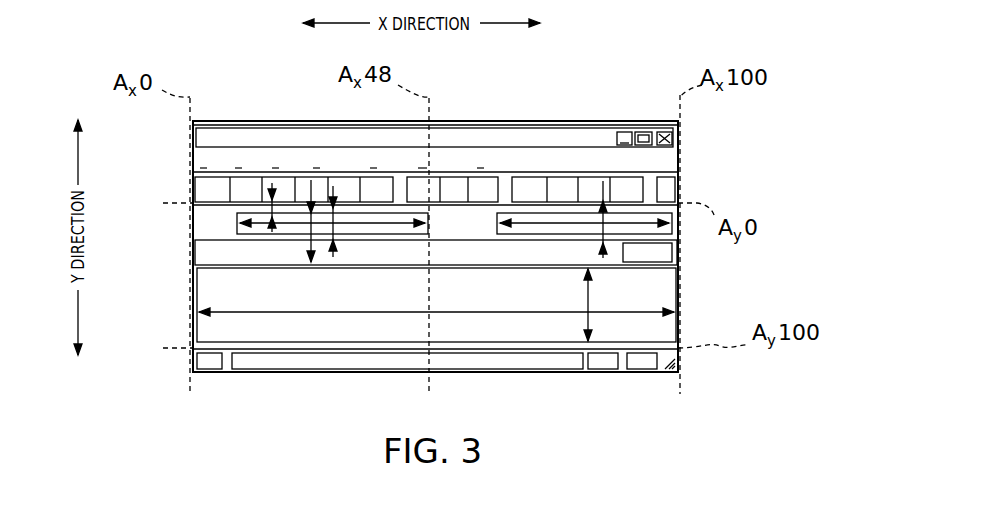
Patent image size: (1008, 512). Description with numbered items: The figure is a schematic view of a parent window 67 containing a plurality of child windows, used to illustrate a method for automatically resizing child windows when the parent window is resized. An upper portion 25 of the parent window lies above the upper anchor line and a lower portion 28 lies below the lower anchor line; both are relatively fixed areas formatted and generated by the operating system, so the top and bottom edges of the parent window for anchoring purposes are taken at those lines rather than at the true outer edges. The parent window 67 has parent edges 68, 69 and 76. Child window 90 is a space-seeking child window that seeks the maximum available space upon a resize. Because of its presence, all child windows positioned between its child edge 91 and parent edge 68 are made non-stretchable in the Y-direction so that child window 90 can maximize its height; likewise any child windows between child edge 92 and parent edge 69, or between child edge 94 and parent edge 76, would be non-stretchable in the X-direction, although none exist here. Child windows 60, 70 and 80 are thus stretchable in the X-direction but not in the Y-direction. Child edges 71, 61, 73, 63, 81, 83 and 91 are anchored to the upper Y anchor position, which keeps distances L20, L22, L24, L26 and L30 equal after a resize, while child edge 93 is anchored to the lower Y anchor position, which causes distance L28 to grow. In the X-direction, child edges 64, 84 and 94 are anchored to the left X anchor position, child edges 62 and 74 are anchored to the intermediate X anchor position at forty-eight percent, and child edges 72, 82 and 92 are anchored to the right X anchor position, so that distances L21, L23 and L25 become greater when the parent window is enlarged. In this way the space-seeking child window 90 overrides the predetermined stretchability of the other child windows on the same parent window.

The upper portion 25 is at (705, 122).
The lower portion 28 is at (685, 347).
The child window 60 is at (227, 210).
The child edge 61 is at (378, 212).
The child edge 62 is at (443, 227).
The child edge 63 is at (286, 236).
The child edge 64 is at (237, 213).
The parent window 67 is at (646, 75).
The parent edge 68 is at (631, 135).
The parent edge 69 is at (680, 292).
The child window 70 is at (586, 143).
The child edge 71 is at (575, 213).
The child edge 72 is at (675, 229).
The child edge 73 is at (550, 238).
The child edge 74 is at (497, 210).
The parent edge 76 is at (195, 333).
The child window 80 is at (452, 250).
The child edge 81 is at (530, 265).
The child edge 82 is at (678, 262).
The child edge 83 is at (238, 256).
The child edge 84 is at (196, 258).
The child window 90 is at (292, 338).
The child edge 91 is at (492, 328).
The child edge 92 is at (678, 328).
The child edge 93 is at (320, 345).
The child edge 94 is at (197, 298).
The distance L20 is at (270, 212).
The distance L21 is at (412, 215).
The distance L22 is at (336, 230).
The distance L23 is at (571, 238).
The distance L24 is at (373, 266).
The distance L25 is at (461, 284).
The distance L26 is at (296, 158).
The distance L28 is at (590, 292).
The distance L30 is at (635, 223).